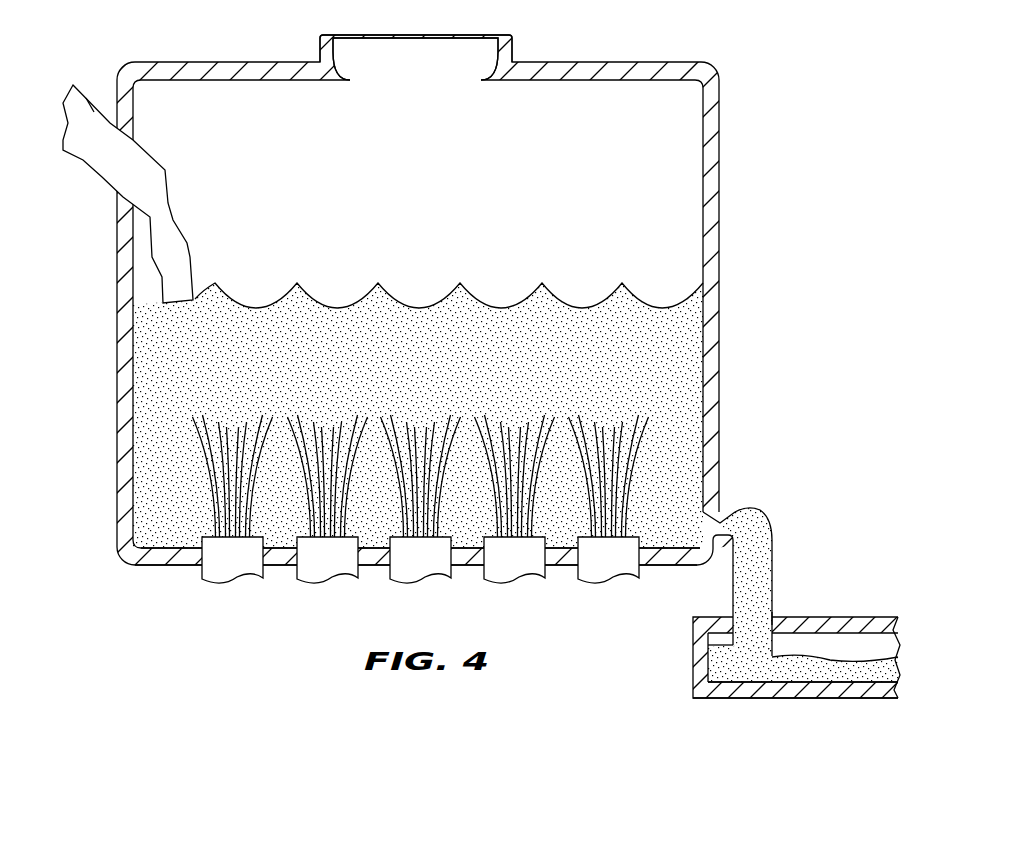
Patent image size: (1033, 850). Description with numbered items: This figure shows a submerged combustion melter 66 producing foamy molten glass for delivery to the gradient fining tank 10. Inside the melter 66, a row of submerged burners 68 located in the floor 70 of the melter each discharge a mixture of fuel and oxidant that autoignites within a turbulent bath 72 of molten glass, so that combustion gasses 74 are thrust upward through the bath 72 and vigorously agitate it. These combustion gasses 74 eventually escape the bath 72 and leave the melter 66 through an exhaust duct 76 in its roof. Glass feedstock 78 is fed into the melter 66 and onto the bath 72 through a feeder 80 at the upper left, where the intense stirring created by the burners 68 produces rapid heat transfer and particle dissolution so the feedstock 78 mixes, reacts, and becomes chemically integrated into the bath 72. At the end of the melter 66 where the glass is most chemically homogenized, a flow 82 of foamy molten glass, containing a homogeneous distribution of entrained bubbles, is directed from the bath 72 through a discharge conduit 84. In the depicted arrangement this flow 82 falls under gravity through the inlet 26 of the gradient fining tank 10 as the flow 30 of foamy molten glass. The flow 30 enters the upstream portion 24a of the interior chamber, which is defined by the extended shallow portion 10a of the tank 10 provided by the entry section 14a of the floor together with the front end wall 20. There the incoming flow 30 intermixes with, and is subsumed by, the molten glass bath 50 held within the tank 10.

The gradient fining tank 10 is at (710, 608).
The extended shallow portion 10a is at (885, 612).
The entry section 14a is at (738, 699).
The front end wall 20 is at (697, 675).
The upstream portion 24a is at (830, 643).
The inlet 26 is at (765, 615).
The flow of foamy molten glass 30 is at (735, 643).
The molten glass bath 50 is at (838, 668).
The submerged combustion melter 66 is at (777, 88).
The submerged burners 68 is at (234, 572).
The floor 70 is at (168, 566).
The turbulent bath 72 is at (432, 359).
The combustion gasses 74 is at (222, 488).
The exhaust duct 76 is at (336, 52).
The glass feedstock 78 is at (95, 158).
The feeder 80 is at (86, 98).
The flow of foamy molten glass 82 is at (753, 512).
The discharge conduit 84 is at (722, 520).